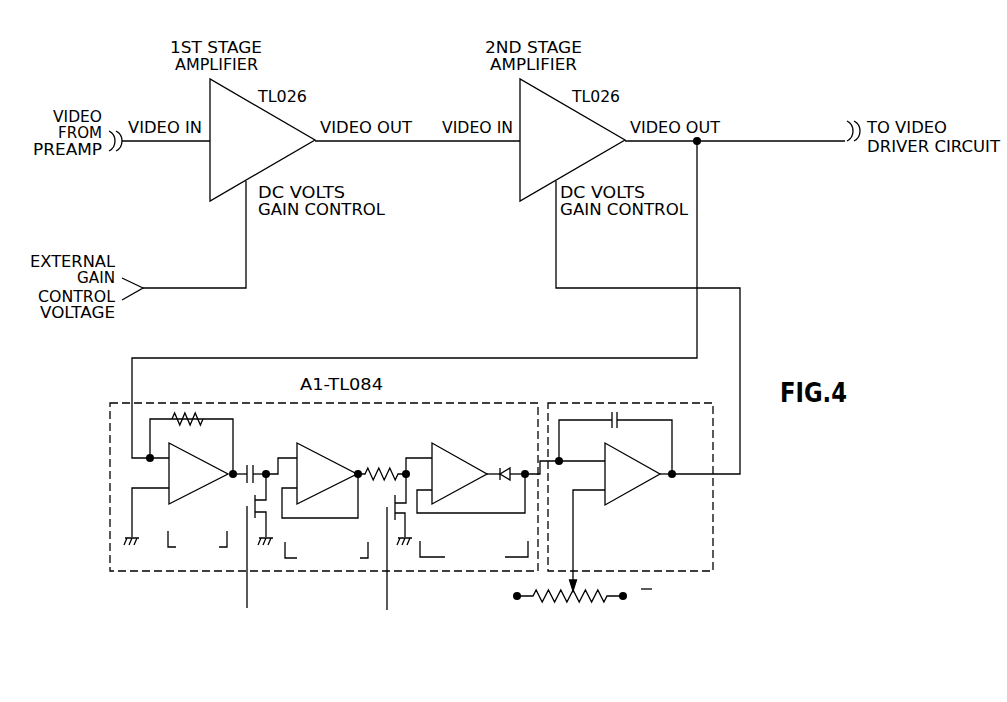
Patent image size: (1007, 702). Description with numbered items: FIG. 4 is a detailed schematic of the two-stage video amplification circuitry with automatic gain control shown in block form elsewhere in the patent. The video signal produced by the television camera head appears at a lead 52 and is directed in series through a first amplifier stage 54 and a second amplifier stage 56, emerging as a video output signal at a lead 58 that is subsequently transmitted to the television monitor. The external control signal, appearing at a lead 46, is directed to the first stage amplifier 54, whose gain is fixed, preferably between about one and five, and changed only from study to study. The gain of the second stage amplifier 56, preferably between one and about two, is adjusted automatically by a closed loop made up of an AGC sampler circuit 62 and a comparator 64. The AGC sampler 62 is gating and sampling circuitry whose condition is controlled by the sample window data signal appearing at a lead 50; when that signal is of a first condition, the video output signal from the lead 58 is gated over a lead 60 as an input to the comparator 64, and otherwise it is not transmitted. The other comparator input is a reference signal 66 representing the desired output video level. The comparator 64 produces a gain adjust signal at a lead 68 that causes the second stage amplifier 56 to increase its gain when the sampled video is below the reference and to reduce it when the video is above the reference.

The lead 46 is at (246, 233).
The lead 50 is at (388, 570).
The lead 52 is at (177, 141).
The first amplifier stage 54 is at (263, 151).
The second amplifier stage 56 is at (575, 151).
The lead 58 is at (760, 141).
The lead 60 is at (697, 258).
The AGC sampler circuit 62 is at (288, 534).
The comparator 64 is at (682, 522).
The reference signal 66 is at (573, 522).
The lead 68 is at (556, 238).